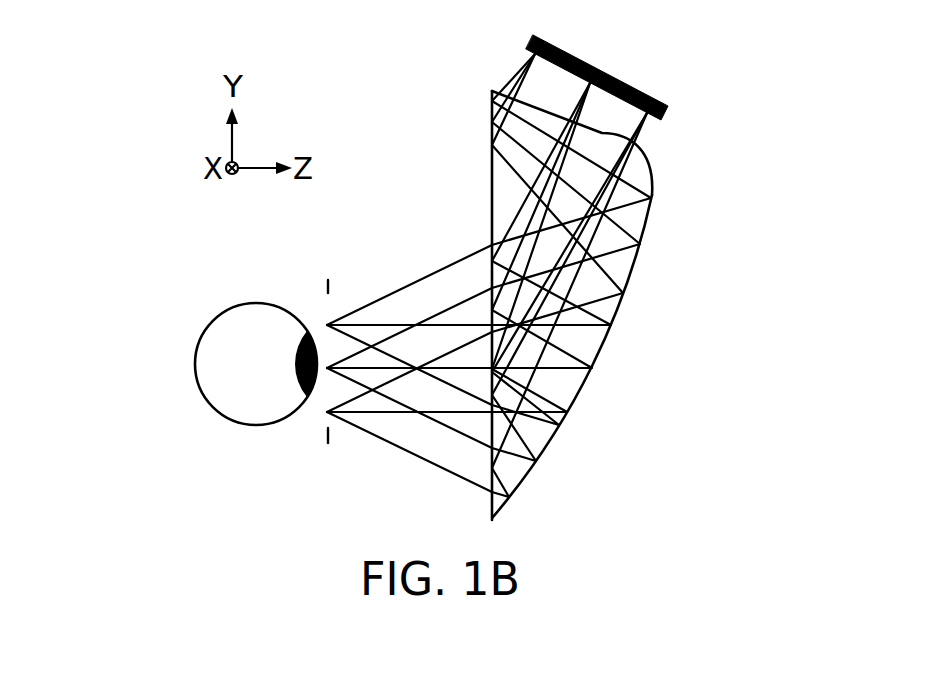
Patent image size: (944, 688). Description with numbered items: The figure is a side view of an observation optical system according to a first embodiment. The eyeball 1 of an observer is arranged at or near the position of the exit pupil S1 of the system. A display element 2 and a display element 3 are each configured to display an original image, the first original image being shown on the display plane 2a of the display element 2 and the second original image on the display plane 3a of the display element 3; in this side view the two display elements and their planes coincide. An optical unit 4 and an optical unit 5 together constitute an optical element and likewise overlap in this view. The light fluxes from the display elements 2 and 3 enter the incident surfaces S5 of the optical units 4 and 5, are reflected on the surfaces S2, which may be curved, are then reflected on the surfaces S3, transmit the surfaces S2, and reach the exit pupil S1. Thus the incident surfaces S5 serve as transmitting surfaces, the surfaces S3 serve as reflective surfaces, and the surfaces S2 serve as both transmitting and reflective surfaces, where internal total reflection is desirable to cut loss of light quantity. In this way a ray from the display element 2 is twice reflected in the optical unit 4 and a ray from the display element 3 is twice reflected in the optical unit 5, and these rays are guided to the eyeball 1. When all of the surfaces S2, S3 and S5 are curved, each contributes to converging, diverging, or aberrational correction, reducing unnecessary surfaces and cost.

The eyeball 1 is at (242, 312).
The display element 3 is at (670, 81).
The display element 2 is at (670, 92).
The display plane 3a is at (670, 92).
The display plane 2a is at (662, 119).
The optical unit 5 is at (540, 308).
The optical unit 4 is at (553, 308).
The exit pupil S1 is at (327, 388).
The surface S2 is at (492, 501).
The surface S3 is at (531, 477).
The incident surface S5 is at (645, 150).